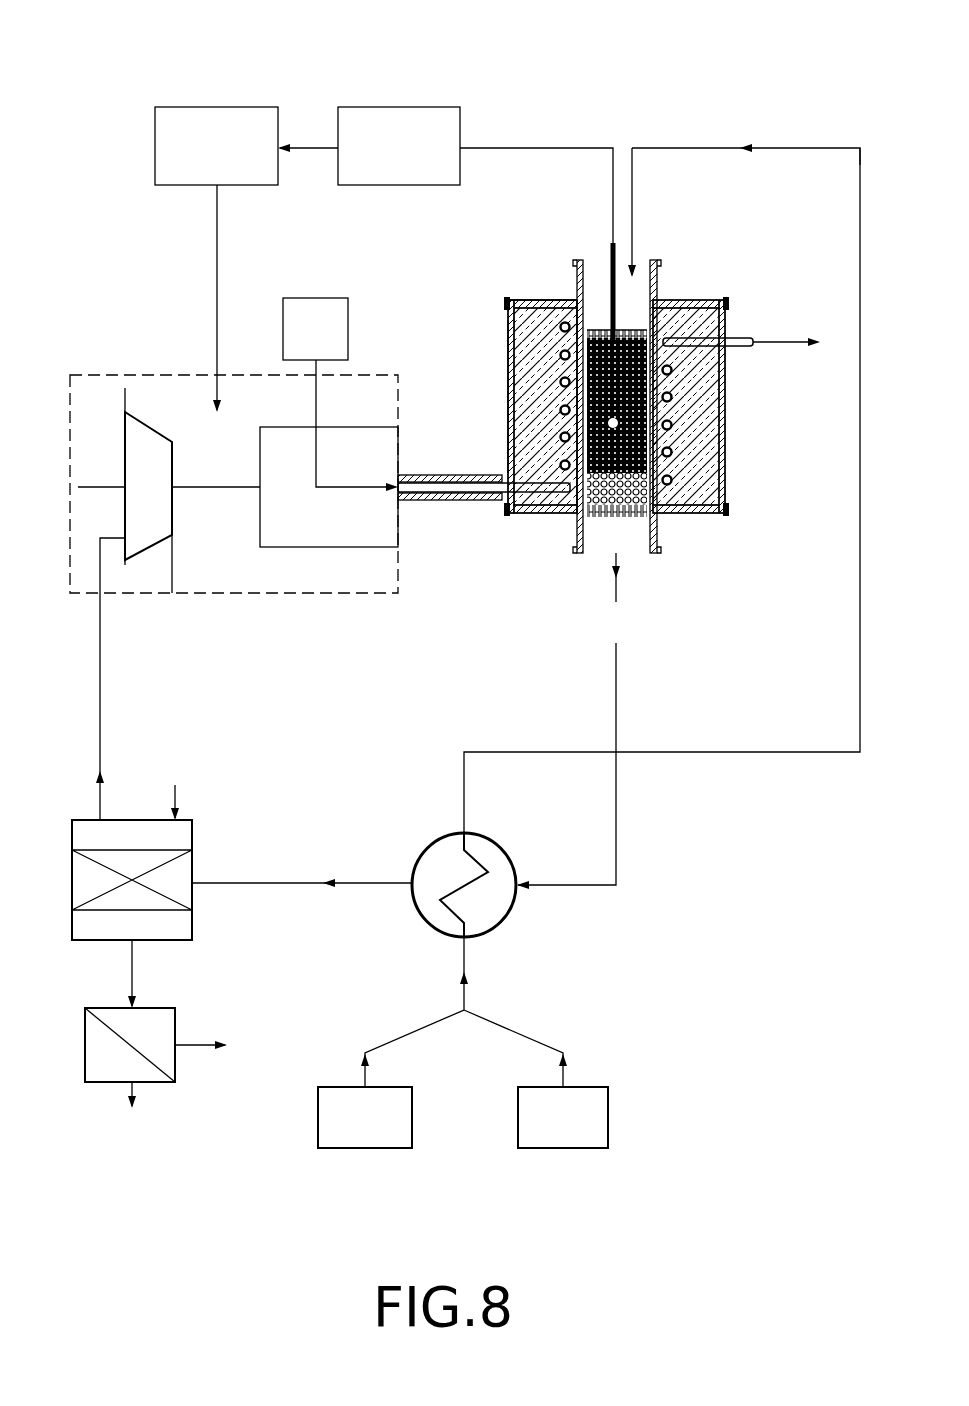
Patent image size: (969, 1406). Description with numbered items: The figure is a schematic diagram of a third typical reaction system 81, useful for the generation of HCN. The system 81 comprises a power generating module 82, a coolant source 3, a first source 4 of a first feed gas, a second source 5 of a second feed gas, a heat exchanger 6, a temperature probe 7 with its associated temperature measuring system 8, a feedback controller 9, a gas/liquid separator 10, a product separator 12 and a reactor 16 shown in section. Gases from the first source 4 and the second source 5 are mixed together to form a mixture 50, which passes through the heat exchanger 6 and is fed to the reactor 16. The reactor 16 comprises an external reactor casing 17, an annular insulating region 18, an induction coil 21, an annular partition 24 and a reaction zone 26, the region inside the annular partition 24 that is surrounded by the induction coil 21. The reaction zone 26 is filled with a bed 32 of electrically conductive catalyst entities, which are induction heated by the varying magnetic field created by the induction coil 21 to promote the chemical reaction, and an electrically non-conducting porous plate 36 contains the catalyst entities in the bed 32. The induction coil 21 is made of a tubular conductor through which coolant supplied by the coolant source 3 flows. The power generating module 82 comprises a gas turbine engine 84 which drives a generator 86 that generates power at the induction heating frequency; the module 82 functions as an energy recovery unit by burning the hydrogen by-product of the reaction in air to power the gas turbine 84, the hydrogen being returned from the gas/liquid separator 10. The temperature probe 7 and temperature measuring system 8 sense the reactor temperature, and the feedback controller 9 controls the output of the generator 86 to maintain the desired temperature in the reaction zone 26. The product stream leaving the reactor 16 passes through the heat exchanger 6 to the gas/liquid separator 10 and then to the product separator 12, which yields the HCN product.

The third reaction system 81 is at (168, 42).
The feedback controller 9 is at (228, 165).
The temperature measuring system 8 is at (410, 165).
The coolant source 3 is at (328, 347).
The reactor 16 is at (418, 259).
The mixture 50 is at (823, 150).
The temperature probe 7 is at (603, 262).
The porous plate 36 is at (600, 327).
The annular partition 24 is at (555, 300).
The bed of electrically conductive catalyst entities 32 is at (585, 330).
The external reactor casing 17 is at (700, 300).
The reaction zone 26 is at (493, 320).
The induction coil 21 is at (668, 370).
The annular insulating region 18 is at (695, 428).
The power generating module 82 is at (155, 372).
The gas turbine engine 84 is at (165, 502).
The generator 86 is at (350, 534).
The heat exchanger 6 is at (430, 840).
The gas/liquid separator 10 is at (172, 941).
The product separator 12 is at (170, 1008).
The second source 5 is at (335, 1148).
The first source 4 is at (590, 1148).